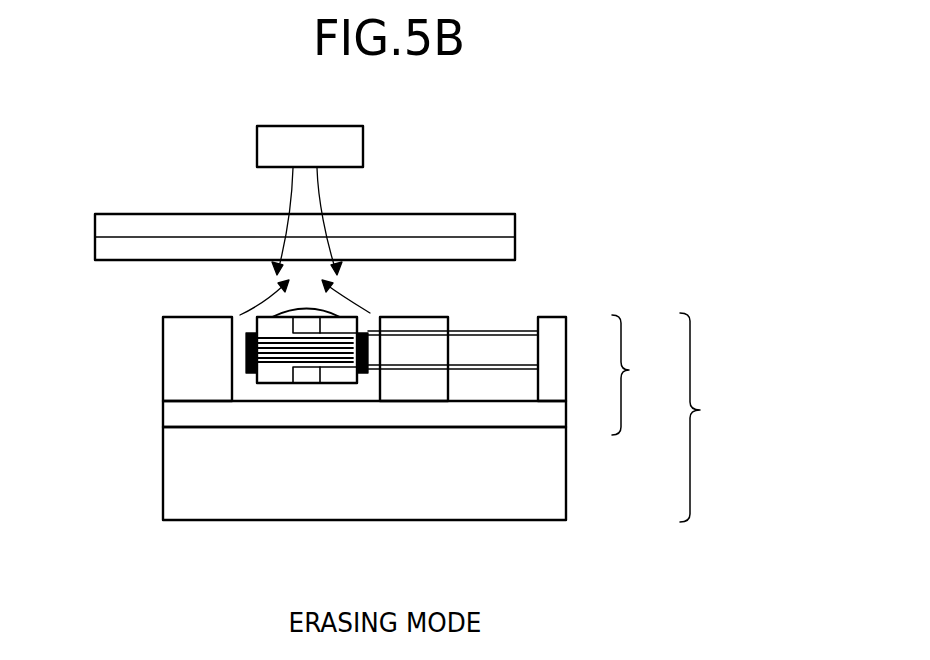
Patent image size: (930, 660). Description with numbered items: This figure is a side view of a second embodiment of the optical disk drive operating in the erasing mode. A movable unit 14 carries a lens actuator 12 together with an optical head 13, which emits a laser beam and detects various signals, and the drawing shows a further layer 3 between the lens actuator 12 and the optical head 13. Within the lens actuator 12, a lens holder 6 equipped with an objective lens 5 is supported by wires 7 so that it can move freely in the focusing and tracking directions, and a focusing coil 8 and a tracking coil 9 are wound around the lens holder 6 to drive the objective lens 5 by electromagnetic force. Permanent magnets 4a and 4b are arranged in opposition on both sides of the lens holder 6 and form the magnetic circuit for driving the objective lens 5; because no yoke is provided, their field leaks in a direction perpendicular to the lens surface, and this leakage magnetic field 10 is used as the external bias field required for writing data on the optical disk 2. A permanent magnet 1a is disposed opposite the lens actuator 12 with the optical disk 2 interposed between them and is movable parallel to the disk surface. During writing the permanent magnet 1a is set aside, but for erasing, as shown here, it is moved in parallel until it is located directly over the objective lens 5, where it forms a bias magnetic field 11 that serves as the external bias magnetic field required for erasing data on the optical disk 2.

The permanent magnet 1a is at (355, 143).
The bias magnetic field 11 is at (318, 195).
The optical disk 2 is at (502, 232).
The objective lens 5 is at (283, 295).
The leakage magnetic field 10 is at (342, 292).
The permanent magnet 4a is at (425, 318).
The permanent magnet 4b is at (173, 335).
The lens holder 6 is at (272, 378).
The focusing coil 8 is at (286, 360).
The tracking coil 9 is at (247, 363).
The wires 7 is at (527, 329).
The yoke layer 3 is at (552, 420).
The optical head 13 is at (552, 502).
The lens actuator 12 is at (642, 375).
The movable unit 14 is at (711, 417).